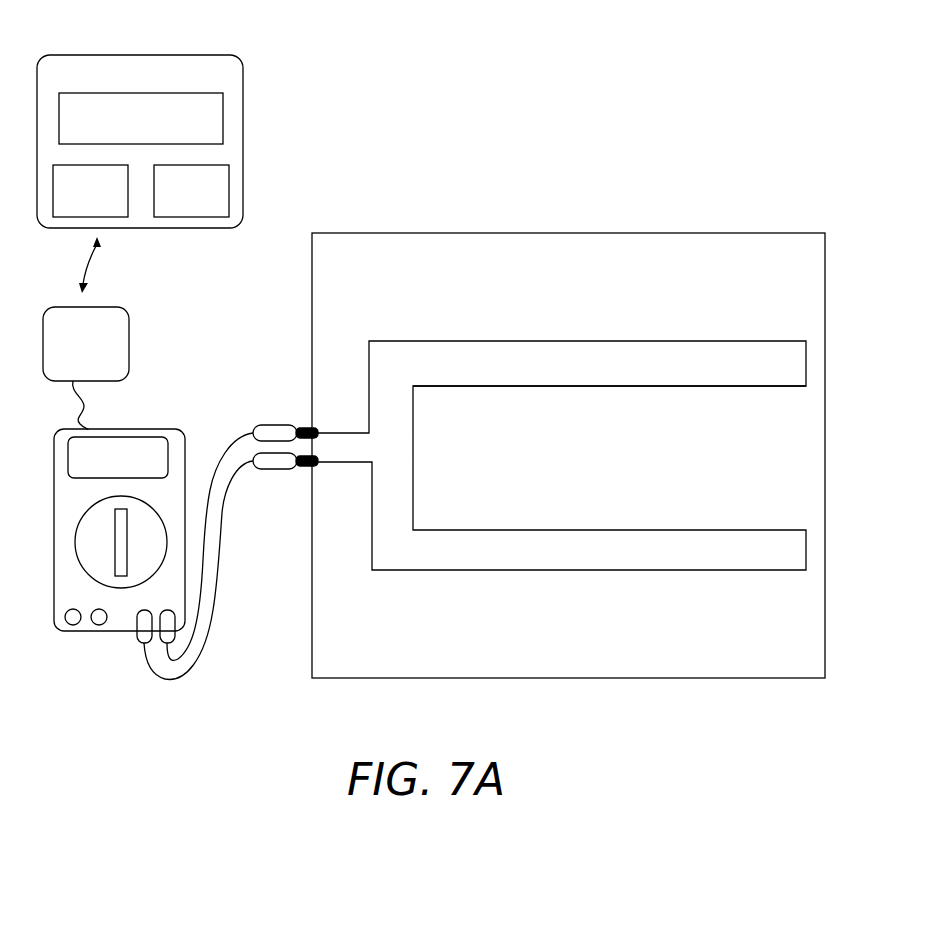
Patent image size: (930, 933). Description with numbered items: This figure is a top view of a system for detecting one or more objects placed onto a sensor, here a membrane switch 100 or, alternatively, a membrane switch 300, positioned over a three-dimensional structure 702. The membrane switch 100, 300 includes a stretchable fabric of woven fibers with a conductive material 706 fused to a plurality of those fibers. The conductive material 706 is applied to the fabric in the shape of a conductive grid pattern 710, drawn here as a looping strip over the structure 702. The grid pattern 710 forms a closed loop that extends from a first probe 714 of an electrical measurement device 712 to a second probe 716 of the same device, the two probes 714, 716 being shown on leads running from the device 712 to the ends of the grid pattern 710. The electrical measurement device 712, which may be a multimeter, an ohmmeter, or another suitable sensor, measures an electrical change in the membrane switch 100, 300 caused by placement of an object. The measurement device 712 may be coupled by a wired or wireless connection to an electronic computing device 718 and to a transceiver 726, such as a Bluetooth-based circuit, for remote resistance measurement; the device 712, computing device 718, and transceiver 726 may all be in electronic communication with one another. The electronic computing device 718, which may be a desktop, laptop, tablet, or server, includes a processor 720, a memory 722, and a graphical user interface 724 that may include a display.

The membrane switch 100 is at (368, 90).
The membrane switch 300 is at (499, 207).
The 3-dimensional structure 702 is at (683, 246).
The conductive material 706 is at (563, 355).
The conductive grid pattern 710 is at (671, 396).
The electrical measurement device 712 is at (152, 428).
The first probe 714 is at (277, 470).
The second probe 716 is at (276, 424).
The electronic computing device 718 is at (233, 71).
The processor 720 is at (68, 218).
The memory 722 is at (229, 188).
The graphical user interface 724 is at (224, 119).
The transceiver 726 is at (130, 337).